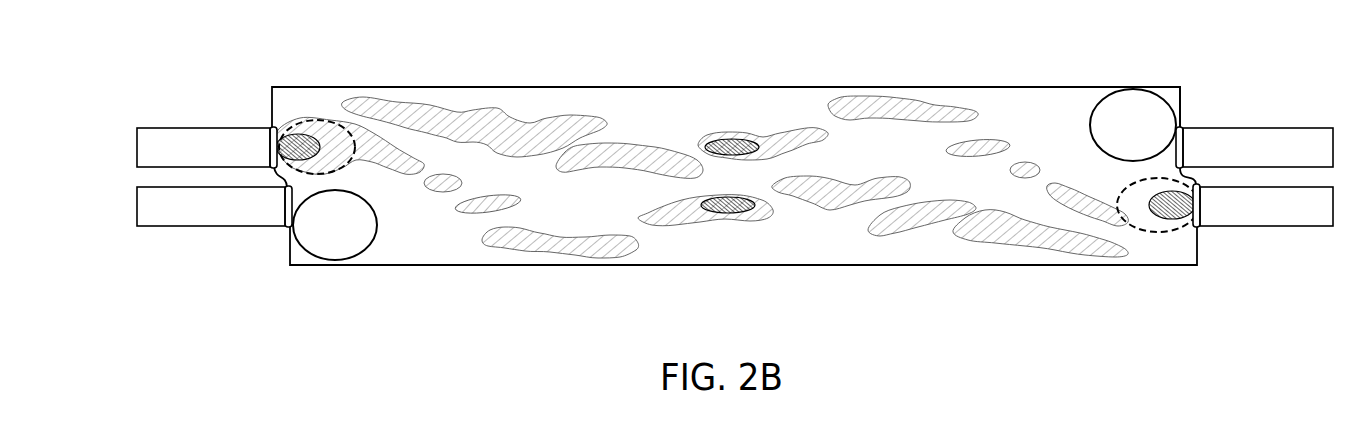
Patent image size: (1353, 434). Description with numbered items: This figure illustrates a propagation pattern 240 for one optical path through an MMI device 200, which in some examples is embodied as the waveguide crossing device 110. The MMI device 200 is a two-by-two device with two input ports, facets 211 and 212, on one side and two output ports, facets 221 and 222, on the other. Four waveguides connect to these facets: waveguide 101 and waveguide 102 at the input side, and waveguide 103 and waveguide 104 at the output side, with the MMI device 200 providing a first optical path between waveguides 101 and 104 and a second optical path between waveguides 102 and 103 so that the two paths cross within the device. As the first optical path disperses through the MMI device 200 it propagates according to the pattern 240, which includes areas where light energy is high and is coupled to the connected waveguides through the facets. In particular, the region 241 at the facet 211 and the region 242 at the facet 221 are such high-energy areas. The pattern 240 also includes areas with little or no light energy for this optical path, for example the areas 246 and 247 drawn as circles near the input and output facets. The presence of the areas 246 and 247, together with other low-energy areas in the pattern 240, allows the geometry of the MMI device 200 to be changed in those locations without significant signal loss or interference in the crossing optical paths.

The MMI device 200 is at (806, 38).
The pattern 240 is at (480, 87).
The waveguide crossing device 110 is at (1182, 87).
The region 241 is at (282, 138).
The region 242 is at (1182, 210).
The area 246 is at (350, 260).
The area 247 is at (1106, 99).
The facet 211 is at (270, 127).
The facet 212 is at (286, 228).
The facet 221 is at (1198, 227).
The facet 222 is at (1183, 125).
The waveguide 101 is at (224, 158).
The waveguide 102 is at (224, 215).
The waveguide 103 is at (1283, 158).
The waveguide 104 is at (1283, 215).